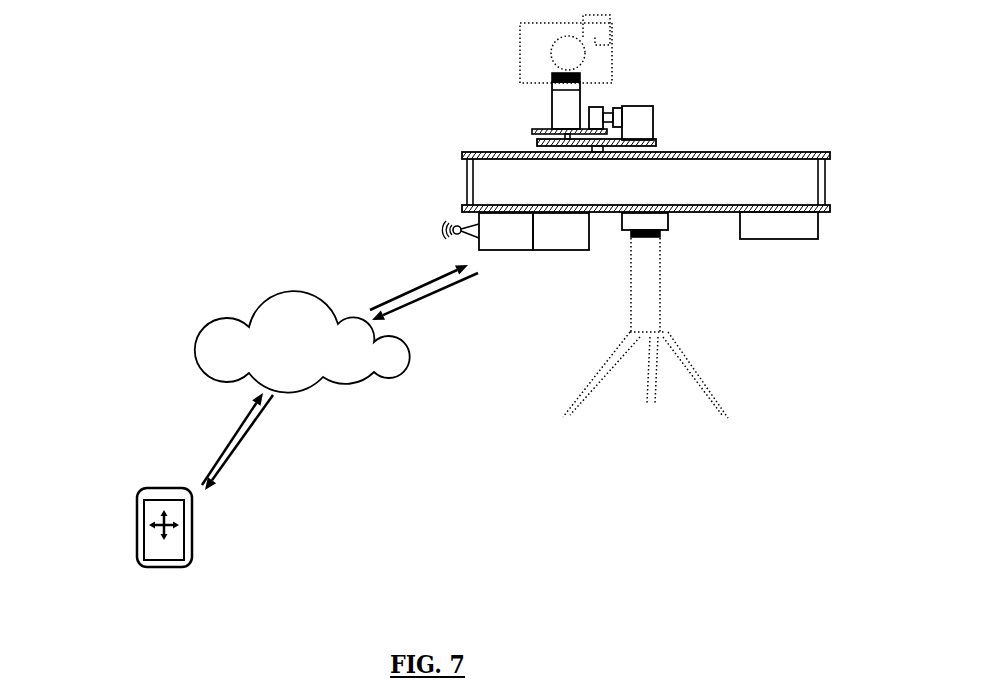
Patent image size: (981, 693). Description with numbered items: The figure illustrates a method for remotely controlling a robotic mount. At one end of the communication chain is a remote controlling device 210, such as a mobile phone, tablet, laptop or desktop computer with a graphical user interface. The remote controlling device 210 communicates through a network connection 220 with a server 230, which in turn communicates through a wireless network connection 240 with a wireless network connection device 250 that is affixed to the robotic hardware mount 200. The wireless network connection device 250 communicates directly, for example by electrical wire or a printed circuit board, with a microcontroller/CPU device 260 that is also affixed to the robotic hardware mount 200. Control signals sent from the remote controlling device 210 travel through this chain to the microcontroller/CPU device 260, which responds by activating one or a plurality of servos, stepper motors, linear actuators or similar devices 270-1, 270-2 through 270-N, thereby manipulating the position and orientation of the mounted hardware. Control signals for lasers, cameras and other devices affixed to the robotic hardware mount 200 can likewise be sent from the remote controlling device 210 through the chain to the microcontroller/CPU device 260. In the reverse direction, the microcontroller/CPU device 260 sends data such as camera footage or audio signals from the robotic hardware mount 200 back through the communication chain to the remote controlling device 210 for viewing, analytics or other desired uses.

The robotic hardware mount 200 is at (495, 133).
The remote controlling device 210 is at (135, 518).
The network connection 220 is at (213, 447).
The server 230 is at (215, 322).
The wireless network connection 240 is at (402, 288).
The wireless network connection device 250 is at (505, 250).
The microcontroller/CPU device 260 is at (558, 250).
The servo, stepper motor, linear actuator or similar device 270-1 is at (772, 239).
The servo, stepper motor, linear actuator or similar device 270-2 is at (655, 118).
The servo, stepper motor, linear actuator or similar device 270-N is at (582, 105).